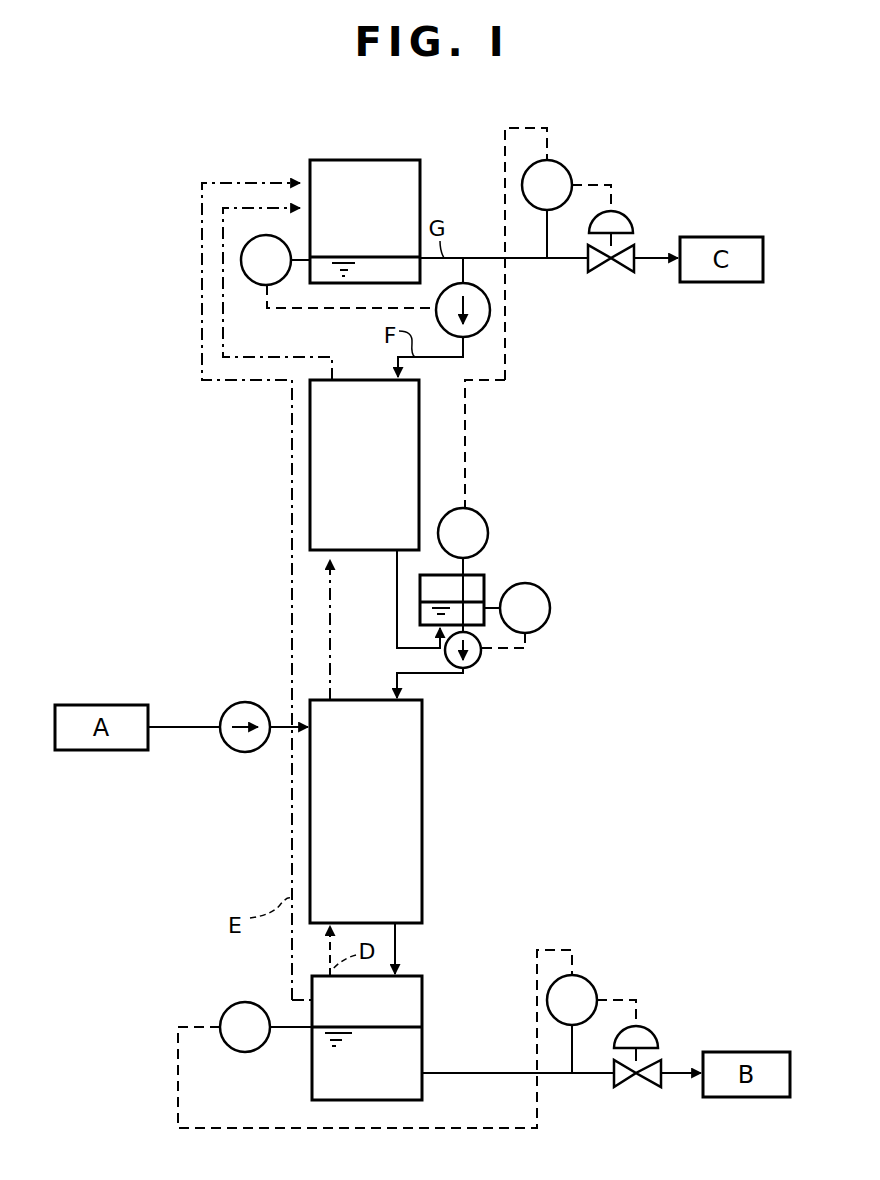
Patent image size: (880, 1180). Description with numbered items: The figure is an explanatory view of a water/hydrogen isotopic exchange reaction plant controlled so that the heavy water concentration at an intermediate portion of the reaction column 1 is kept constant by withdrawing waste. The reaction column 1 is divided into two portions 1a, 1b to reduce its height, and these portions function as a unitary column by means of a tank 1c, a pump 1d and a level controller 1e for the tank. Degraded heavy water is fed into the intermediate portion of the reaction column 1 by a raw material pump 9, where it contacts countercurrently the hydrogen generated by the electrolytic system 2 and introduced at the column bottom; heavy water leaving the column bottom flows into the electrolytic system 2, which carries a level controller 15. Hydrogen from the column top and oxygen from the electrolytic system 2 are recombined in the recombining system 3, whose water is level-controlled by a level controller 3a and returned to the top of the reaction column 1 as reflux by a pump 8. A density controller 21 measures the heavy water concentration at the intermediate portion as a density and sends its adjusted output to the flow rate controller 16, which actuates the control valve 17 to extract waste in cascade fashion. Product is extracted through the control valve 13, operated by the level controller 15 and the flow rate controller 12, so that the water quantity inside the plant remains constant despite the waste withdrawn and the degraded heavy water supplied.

The water/hydrogen isotopic exchange reaction column 1 is at (453, 651).
The portion of the reaction column 1a is at (429, 798).
The portion of the reaction column 1b is at (364, 465).
The tank 1c is at (484, 590).
The pump 1d is at (478, 663).
The level controller for the tank 1e is at (549, 599).
The electrolytic system 2 is at (367, 1038).
The recombining system 3 is at (365, 221).
The level controller 3a is at (254, 285).
The pump 8 is at (477, 333).
The raw material pump 9 is at (245, 702).
The flow rate controller 12 is at (587, 981).
The control valve 13 is at (653, 1029).
The level controller 15 is at (233, 1004).
The flow rate controller 16 is at (565, 169).
The control valve 17 is at (626, 213).
The density controller 21 is at (478, 516).